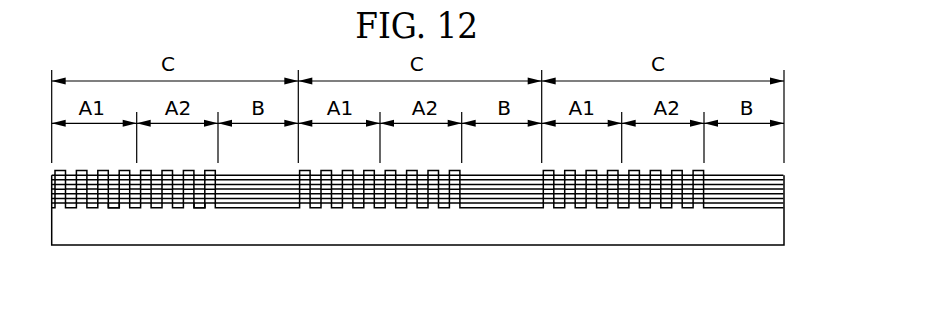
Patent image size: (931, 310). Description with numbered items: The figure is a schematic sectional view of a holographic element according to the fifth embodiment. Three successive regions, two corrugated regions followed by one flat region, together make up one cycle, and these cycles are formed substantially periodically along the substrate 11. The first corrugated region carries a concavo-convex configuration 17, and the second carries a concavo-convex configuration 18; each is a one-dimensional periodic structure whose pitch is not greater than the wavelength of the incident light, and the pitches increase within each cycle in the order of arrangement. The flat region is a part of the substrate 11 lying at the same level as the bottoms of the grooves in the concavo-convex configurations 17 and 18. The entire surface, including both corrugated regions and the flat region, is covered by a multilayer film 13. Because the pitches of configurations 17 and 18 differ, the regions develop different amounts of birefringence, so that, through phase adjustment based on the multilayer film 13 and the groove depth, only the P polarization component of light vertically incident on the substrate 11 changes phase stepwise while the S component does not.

The substrate 11 is at (553, 240).
The multilayer film 13 is at (784, 191).
The concavo-convex configuration 17 is at (122, 207).
The concavo-convex configuration 18 is at (200, 208).